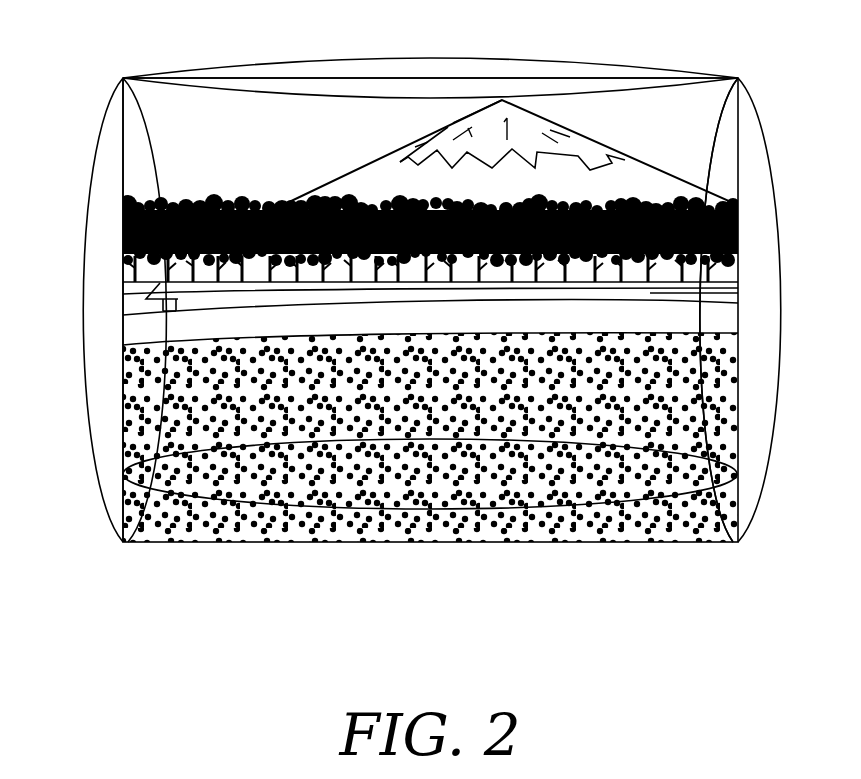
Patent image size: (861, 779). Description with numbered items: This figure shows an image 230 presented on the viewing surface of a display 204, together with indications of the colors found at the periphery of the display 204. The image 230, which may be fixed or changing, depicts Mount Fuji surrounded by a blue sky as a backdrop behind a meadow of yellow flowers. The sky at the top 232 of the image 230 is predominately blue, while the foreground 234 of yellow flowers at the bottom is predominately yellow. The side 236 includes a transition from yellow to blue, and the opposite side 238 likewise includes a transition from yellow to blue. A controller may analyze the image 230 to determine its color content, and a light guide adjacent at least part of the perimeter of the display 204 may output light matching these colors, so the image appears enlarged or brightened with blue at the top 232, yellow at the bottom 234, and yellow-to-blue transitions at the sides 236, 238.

The display 204 is at (694, 98).
The image 230 is at (183, 85).
The top of the image 232 is at (433, 80).
The foreground 234 is at (225, 530).
The side 236 is at (728, 320).
The side 238 is at (123, 388).